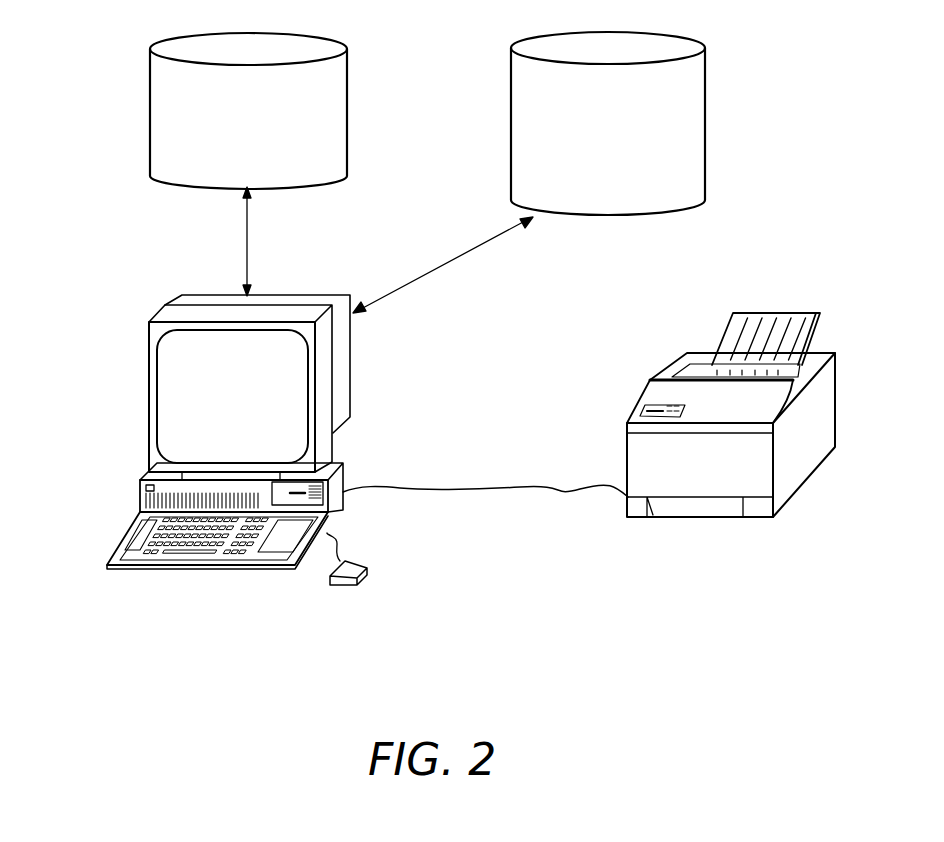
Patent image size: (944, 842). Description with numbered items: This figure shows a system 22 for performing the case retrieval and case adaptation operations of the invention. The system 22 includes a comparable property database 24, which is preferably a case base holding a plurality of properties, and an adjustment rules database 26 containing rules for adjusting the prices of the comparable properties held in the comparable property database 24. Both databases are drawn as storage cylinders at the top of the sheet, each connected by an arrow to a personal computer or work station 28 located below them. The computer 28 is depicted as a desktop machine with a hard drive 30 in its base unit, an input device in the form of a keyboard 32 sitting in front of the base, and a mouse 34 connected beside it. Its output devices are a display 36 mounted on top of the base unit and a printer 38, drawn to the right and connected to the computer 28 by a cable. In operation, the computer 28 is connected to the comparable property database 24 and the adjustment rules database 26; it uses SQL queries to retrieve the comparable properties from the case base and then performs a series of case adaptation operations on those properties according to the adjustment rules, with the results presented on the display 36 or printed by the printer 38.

The system 22 is at (74, 206).
The comparable property database 24 is at (347, 61).
The adjustment rules database 26 is at (705, 74).
The personal computer or work station 28 is at (488, 355).
The hard drive 30 is at (140, 488).
The keyboard 32 is at (118, 532).
The mouse 34 is at (357, 583).
The display 36 is at (148, 380).
The printer 38 is at (815, 408).